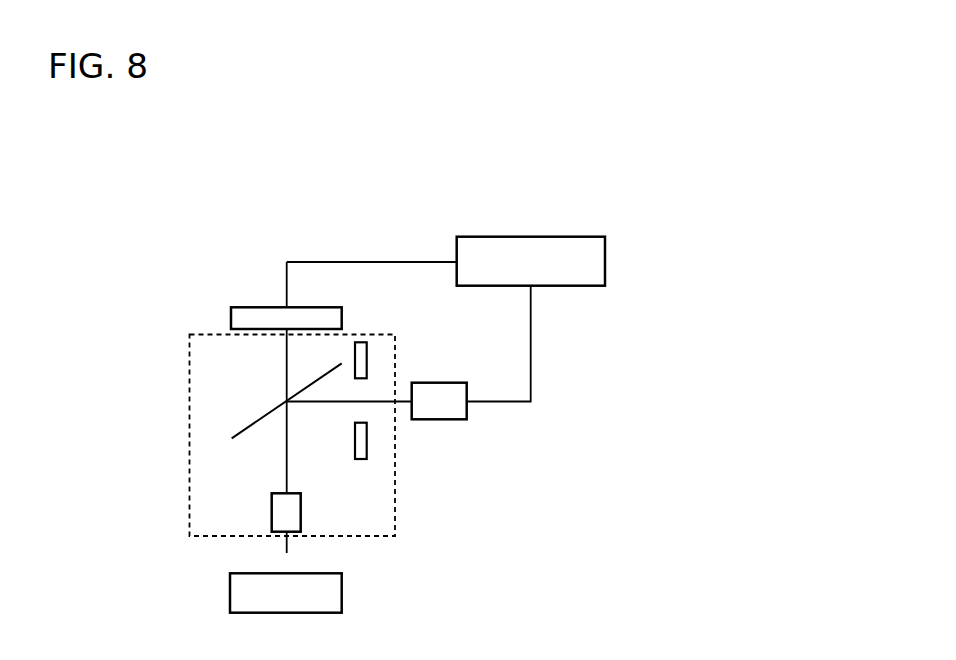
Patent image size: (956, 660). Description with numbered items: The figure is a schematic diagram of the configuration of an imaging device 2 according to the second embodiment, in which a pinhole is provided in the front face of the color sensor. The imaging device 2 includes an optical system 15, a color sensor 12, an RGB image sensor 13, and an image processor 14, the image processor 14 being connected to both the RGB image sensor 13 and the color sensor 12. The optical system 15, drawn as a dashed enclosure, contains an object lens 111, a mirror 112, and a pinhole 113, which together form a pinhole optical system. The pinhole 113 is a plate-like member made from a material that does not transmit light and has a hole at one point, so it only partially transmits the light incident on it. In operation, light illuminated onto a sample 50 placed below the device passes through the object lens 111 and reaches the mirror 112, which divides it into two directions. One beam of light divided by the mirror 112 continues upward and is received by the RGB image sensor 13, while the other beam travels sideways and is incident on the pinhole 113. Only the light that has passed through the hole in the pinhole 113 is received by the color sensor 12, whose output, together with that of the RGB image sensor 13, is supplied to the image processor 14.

The imaging device 2 is at (639, 202).
The color sensor 12 is at (440, 383).
The RGB image sensor 13 is at (260, 307).
The image processor 14 is at (557, 237).
The optical system 15 is at (189, 400).
The sample 50 is at (342, 590).
The object lens 111 is at (292, 493).
The mirror 112 is at (264, 416).
The pinhole 113 is at (367, 360).